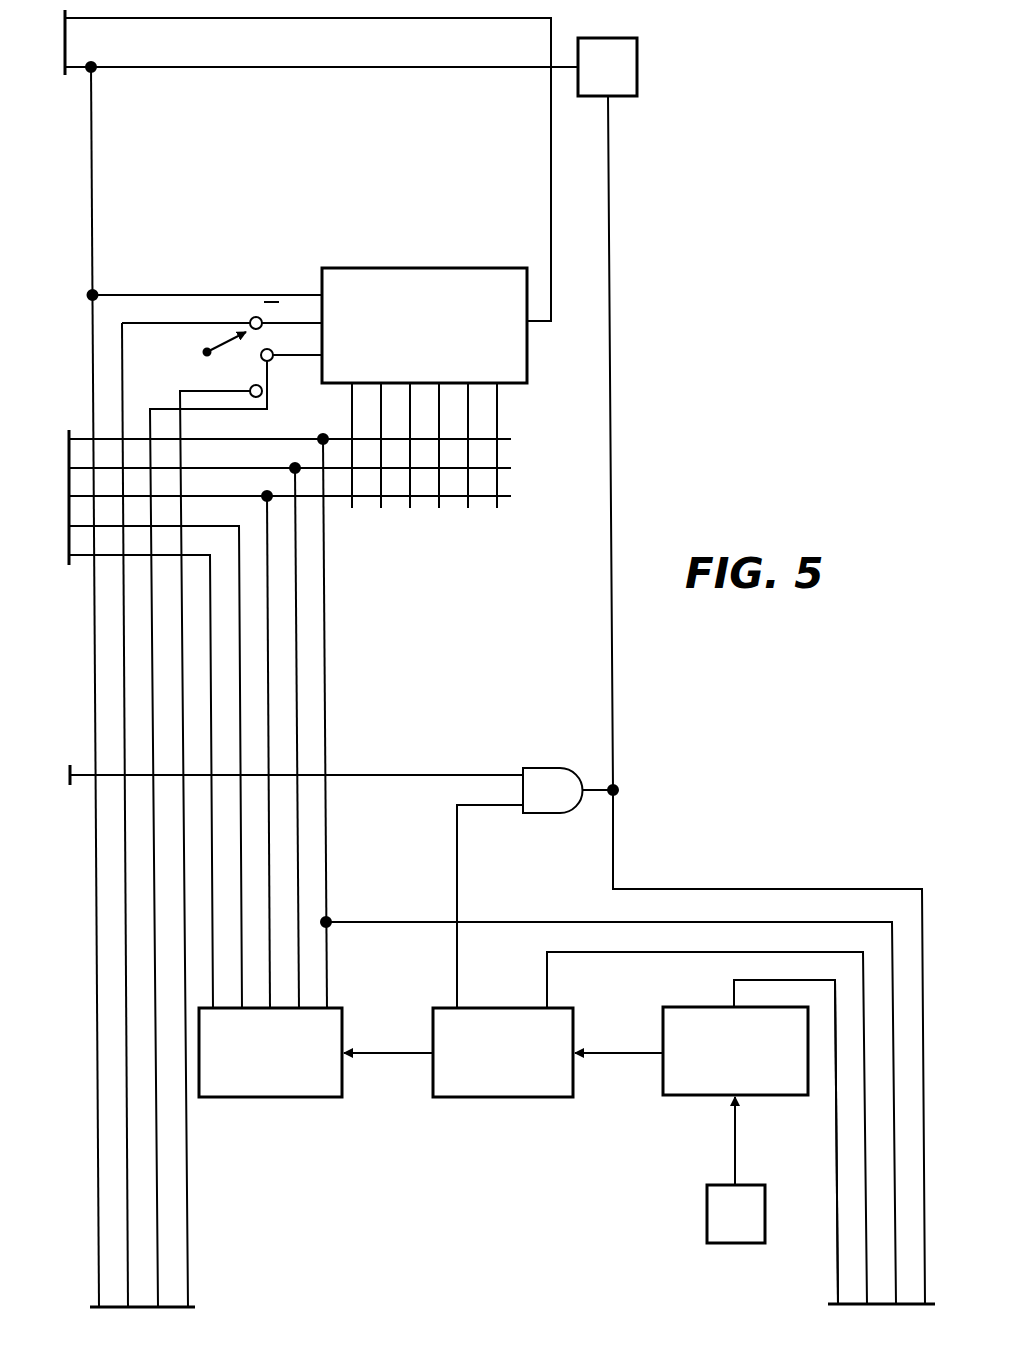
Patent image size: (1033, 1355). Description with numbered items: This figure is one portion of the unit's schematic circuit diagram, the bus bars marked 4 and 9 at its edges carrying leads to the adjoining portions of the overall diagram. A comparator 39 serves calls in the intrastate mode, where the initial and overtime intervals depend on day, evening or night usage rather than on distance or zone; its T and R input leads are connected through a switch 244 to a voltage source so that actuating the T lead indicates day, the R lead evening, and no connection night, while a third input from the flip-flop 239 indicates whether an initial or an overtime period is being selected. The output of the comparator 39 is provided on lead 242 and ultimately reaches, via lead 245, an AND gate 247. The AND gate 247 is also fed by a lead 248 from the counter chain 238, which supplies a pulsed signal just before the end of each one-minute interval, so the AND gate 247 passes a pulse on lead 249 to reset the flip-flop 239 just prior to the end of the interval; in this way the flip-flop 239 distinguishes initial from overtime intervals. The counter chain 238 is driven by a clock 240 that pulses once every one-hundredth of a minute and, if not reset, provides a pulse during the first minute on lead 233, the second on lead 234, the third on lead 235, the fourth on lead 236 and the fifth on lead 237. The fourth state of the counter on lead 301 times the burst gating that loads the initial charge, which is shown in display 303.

The bus 4 is at (58, 399).
The bus 9 is at (512, 1322).
The comparator 39 is at (482, 268).
The lead 233 is at (210, 592).
The lead 234 is at (239, 622).
The lead 235 is at (268, 650).
The lead 236 is at (298, 682).
The lead 237 is at (326, 715).
The counter chain 238 is at (509, 1098).
The flip-flop 239 is at (639, 62).
The clock 240 is at (707, 1197).
The lead 242 is at (338, 20).
The switch 244 is at (212, 372).
The lead 245 is at (400, 770).
The AND gate 247 is at (561, 768).
The lead 248 is at (458, 848).
The lead 249 is at (610, 300).
The lead 301 is at (836, 1122).
The display 303 is at (788, 889).